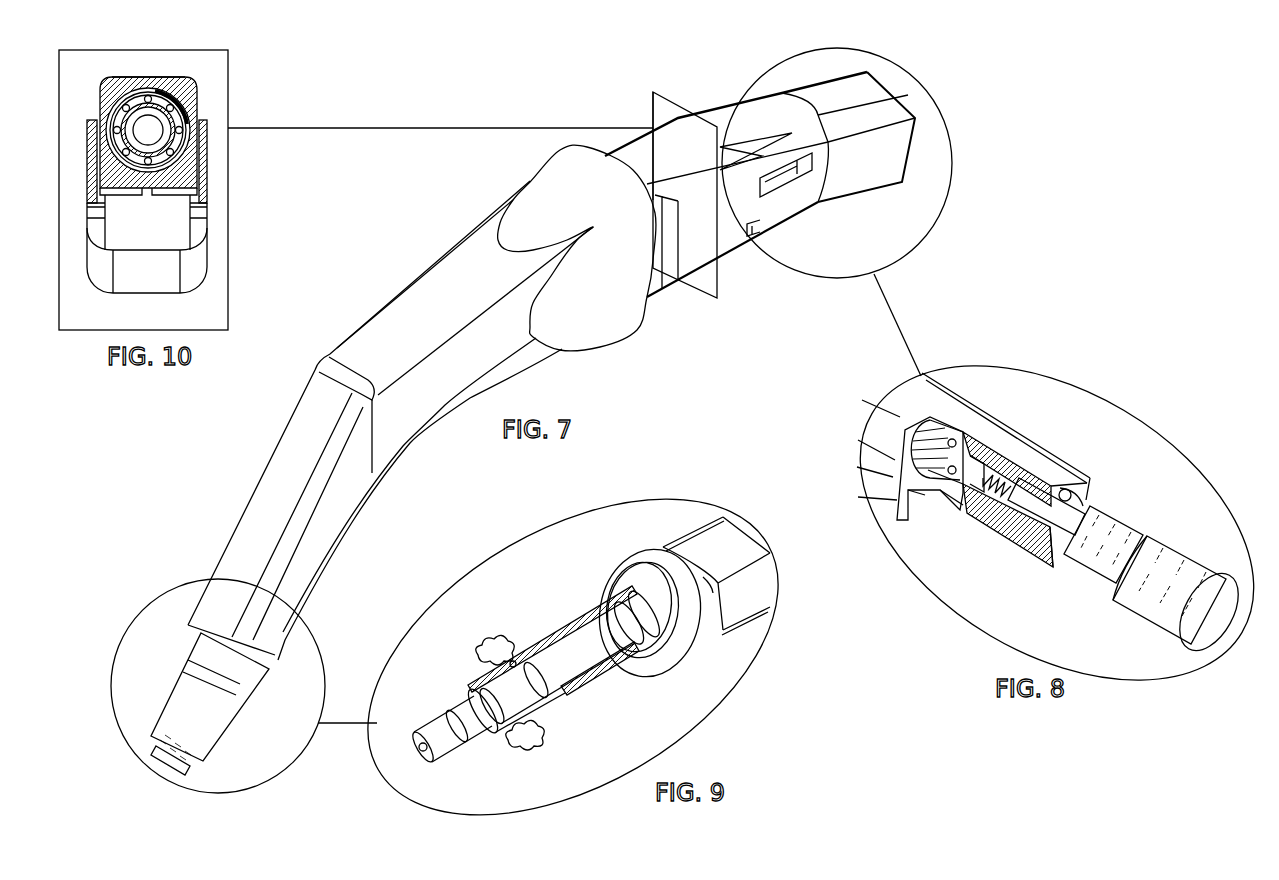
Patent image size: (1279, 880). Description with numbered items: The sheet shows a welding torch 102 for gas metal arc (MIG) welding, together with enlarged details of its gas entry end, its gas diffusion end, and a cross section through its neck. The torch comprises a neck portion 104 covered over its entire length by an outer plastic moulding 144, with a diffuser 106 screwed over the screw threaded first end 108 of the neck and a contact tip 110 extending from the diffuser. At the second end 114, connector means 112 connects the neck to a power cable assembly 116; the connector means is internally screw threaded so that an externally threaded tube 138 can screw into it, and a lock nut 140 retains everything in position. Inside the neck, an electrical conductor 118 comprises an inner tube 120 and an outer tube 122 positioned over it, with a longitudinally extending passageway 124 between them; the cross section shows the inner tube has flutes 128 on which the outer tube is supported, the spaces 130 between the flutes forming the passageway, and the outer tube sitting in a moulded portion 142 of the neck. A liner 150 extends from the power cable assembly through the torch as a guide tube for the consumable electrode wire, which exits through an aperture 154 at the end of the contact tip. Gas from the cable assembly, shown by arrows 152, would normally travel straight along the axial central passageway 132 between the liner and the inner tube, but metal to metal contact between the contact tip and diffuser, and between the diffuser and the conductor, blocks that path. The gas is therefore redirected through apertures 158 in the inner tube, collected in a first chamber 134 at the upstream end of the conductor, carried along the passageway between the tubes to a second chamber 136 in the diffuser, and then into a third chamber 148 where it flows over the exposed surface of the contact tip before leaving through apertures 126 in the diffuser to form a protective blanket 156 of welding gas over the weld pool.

In FIG. 7, the welding torch 102 is at (380, 270).
In FIG. 7, the neck portion 104 is at (252, 484).
In FIG. 9, the diffuser 106 is at (583, 597).
In FIG. 7, the first end 108 is at (224, 727).
In FIG. 9, the first end 108 is at (648, 647).
In FIG. 9, the contact tip 110 is at (428, 713).
In FIG. 7, the connector means 112 is at (872, 193).
In FIG. 8, the connector means 112 is at (1037, 442).
In FIG. 7, the second end 114 is at (795, 222).
In FIG. 8, the second end 114 is at (970, 400).
In FIG. 8, the power cable assembly 116 is at (1156, 530).
In FIG. 8, the electrical conductor 118 is at (963, 477).
In FIG. 10, the inner tube 120 is at (170, 138).
In FIG. 8, the inner tube 120 is at (967, 456).
In FIG. 10, the outer tube 122 is at (192, 85).
In FIG. 8, the outer tube 122 is at (939, 425).
In FIG. 10, the longitudinally extending passageway 124 is at (183, 117).
In FIG. 8, the longitudinally extending passageway 124 is at (914, 435).
In FIG. 9, the apertures 126 is at (512, 660).
In FIG. 10, the flutes 128 is at (200, 103).
In FIG. 8, the flutes 128 is at (900, 456).
In FIG. 10, the spaces 130 is at (160, 157).
In FIG. 8, the spaces 130 is at (956, 407).
In FIG. 8, the axial central passageway 132 is at (984, 495).
In FIG. 8, the first chamber 134 is at (921, 474).
In FIG. 9, the second chamber 136 is at (583, 687).
In FIG. 8, the externally threaded tube 138 is at (1061, 522).
In FIG. 8, the lock nut 140 is at (1075, 491).
In FIG. 7, the moulded portion 142 is at (708, 230).
In FIG. 10, the moulded portion 142 is at (152, 80).
In FIG. 8, the moulded portion 142 is at (897, 520).
In FIG. 7, the outer plastic moulding 144 is at (397, 420).
In FIG. 9, the third chamber 148 is at (570, 703).
In FIG. 8, the liner 150 is at (1002, 537).
In FIG. 8, the arrows 152 is at (988, 474).
In FIG. 9, the aperture 154 is at (423, 753).
In FIG. 9, the blanket 156 is at (473, 655).
In FIG. 8, the apertures 158 is at (935, 467).